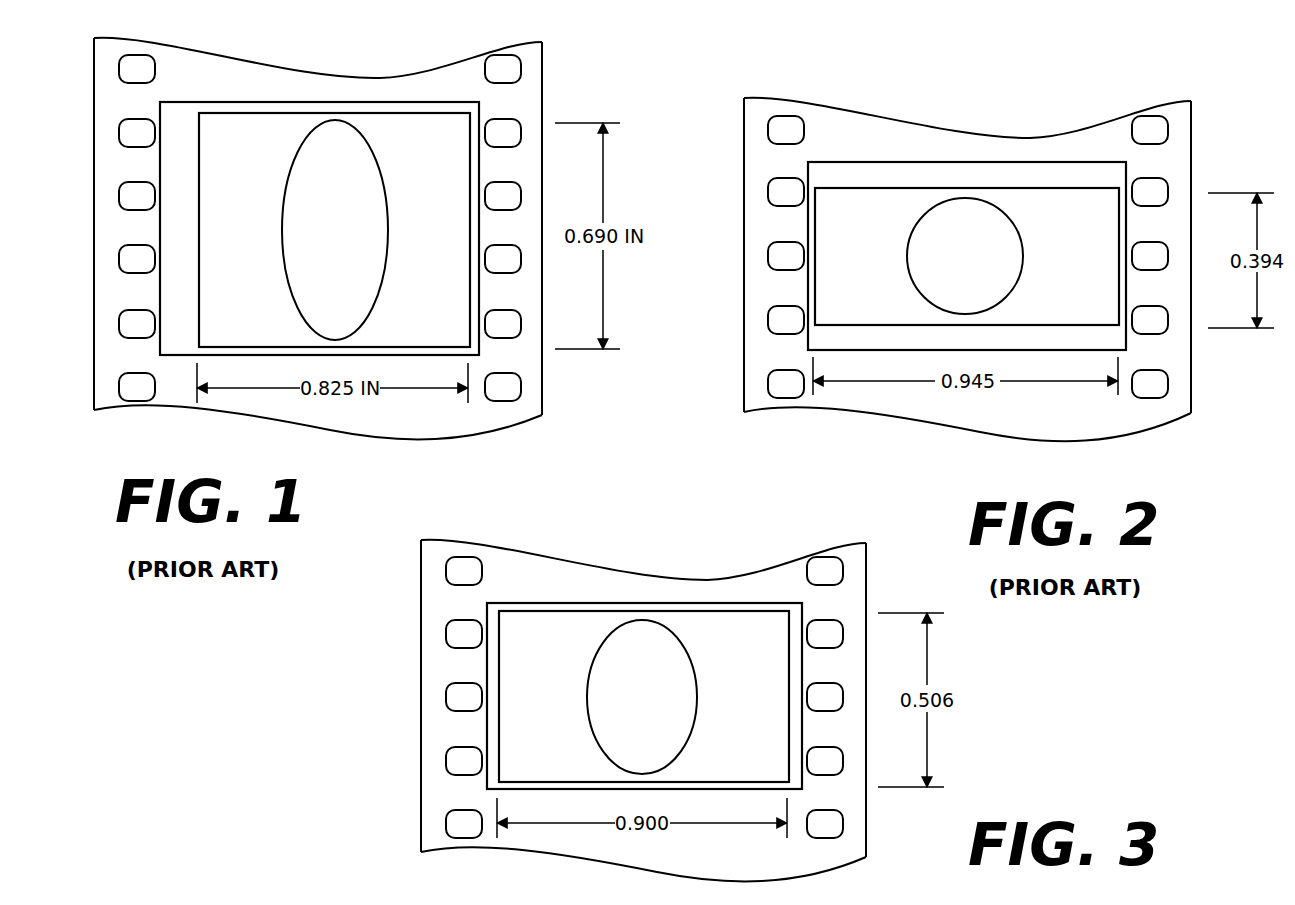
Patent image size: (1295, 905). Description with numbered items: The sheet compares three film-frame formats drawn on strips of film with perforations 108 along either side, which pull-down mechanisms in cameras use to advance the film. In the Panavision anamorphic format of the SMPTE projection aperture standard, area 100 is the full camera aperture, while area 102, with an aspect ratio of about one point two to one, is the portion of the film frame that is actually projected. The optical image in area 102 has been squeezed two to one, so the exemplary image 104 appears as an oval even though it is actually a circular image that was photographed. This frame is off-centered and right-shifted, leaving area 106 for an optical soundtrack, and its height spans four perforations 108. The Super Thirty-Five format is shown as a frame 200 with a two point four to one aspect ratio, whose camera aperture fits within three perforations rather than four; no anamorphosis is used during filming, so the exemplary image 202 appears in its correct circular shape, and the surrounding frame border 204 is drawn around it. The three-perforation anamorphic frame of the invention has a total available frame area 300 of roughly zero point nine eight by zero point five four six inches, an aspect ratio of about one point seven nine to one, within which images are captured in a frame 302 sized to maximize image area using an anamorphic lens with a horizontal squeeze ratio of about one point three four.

In FIG. 1, the full camera aperture 100 is at (254, 103).
In FIG. 1, the projected area 102 is at (297, 112).
In FIG. 1, the exemplary image 104 is at (387, 200).
In FIG. 1, the optical soundtrack area 106 is at (185, 197).
In FIG. 1, the perforations 108 is at (122, 247).
In FIG. 2, the Super 35 frame 200 is at (937, 188).
In FIG. 2, the exemplary image 202 is at (1025, 258).
In FIG. 2, the frame border 204 is at (890, 162).
In FIG. 3, the total available frame area 300 is at (560, 603).
In FIG. 3, the frame 302 is at (627, 611).